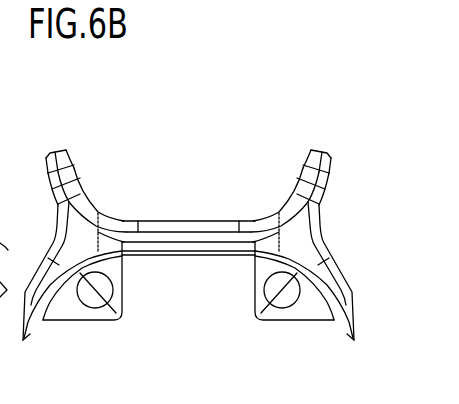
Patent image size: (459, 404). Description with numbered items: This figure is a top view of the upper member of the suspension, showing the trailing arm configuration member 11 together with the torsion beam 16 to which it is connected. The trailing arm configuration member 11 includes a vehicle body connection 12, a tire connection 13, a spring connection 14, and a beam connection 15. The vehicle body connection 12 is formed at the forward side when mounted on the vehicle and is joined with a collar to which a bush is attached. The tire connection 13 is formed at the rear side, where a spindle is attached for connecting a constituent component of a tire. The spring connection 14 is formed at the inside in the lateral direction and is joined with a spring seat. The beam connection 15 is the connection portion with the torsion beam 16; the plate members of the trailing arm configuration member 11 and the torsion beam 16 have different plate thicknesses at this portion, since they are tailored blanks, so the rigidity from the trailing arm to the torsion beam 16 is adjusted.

The trailing arm configuration member 11 is at (58, 209).
The vehicle body connection 12 is at (68, 151).
The tire connection 13 is at (43, 323).
The spring connection 14 is at (188, 295).
The beam connection 15 is at (250, 227).
The torsion beam 16 is at (182, 243).